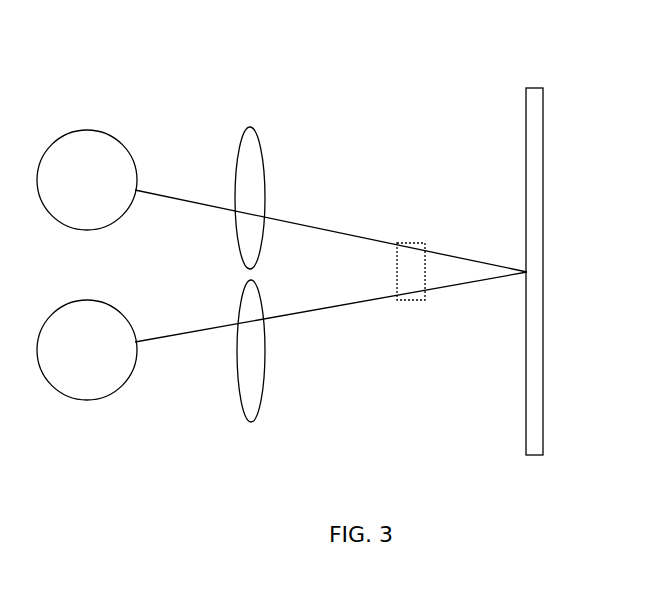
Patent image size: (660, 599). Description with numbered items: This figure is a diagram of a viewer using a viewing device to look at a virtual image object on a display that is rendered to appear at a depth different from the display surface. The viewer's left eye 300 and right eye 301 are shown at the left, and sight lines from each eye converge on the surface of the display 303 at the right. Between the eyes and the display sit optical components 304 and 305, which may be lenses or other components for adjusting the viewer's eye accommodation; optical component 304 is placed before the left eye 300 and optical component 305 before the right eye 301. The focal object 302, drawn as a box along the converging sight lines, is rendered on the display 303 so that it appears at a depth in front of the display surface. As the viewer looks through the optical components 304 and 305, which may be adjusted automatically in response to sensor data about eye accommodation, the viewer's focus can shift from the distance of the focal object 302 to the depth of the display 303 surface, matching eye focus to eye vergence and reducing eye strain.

The left eye 300 is at (112, 133).
The right eye 301 is at (108, 303).
The focal object 302 is at (427, 300).
The display 303 is at (543, 157).
The optical component 304 is at (267, 156).
The optical component 305 is at (267, 350).